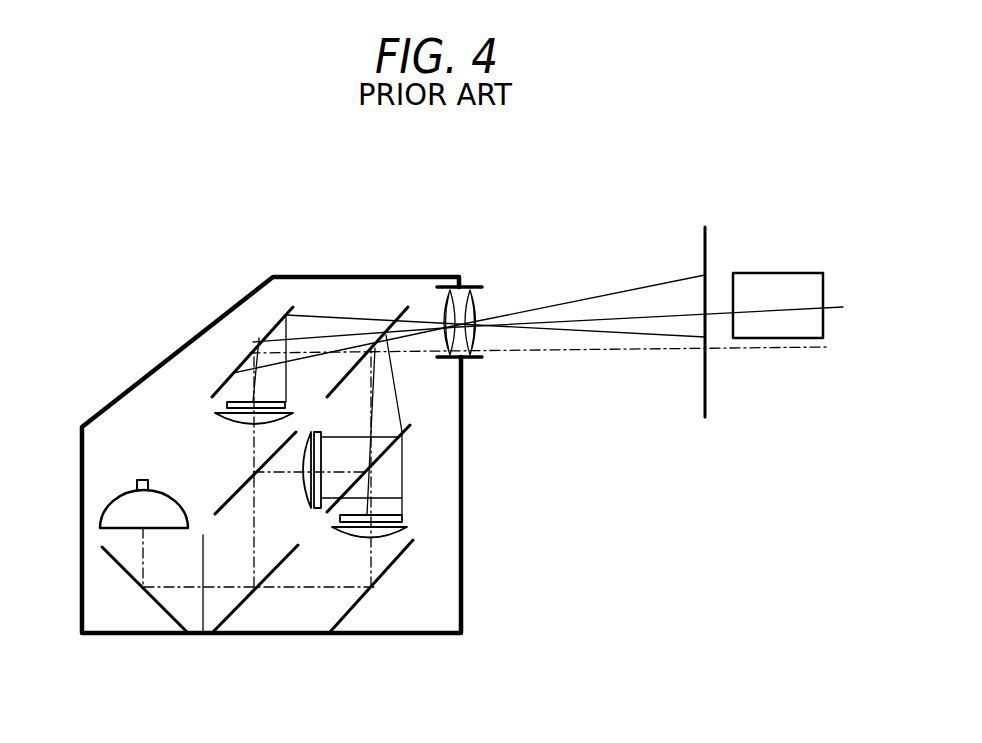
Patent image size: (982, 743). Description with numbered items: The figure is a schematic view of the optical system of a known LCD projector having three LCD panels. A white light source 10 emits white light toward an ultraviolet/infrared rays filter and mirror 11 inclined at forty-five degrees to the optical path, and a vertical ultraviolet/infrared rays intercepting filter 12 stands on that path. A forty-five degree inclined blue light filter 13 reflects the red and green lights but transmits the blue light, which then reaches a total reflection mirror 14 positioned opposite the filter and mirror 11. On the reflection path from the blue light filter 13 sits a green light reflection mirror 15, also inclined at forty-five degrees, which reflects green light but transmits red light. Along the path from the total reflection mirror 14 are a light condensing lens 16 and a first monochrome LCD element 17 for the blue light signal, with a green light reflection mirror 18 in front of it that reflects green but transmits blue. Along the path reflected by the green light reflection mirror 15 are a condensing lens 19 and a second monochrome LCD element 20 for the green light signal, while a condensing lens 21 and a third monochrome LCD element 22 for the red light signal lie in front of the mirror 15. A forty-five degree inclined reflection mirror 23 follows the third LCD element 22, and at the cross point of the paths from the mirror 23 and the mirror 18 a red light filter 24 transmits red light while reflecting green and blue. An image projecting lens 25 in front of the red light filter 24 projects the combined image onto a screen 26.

The white light source 10 is at (123, 517).
The ultraviolet/infrared rays filter and mirror 11 is at (132, 577).
The vertical ultraviolet/infrared rays intercepting filter 12 is at (200, 607).
The blue light filter 13 is at (233, 610).
The total reflection mirror 14 is at (345, 610).
The green light reflection mirror 15 is at (262, 468).
The light condensing lens 16 is at (382, 537).
The first monochrome LCD element 17 is at (388, 512).
The green light reflection mirror 18 is at (412, 427).
The condensing lens 19 is at (303, 490).
The second monochrome LCD element 20 is at (318, 448).
The condensing lens 21 is at (240, 421).
The third monochrome LCD element 22 is at (228, 404).
The reflection mirror 23 is at (262, 333).
The red light filter 24 is at (398, 312).
The image projecting lens 25 is at (478, 300).
The screen 26 is at (708, 240).